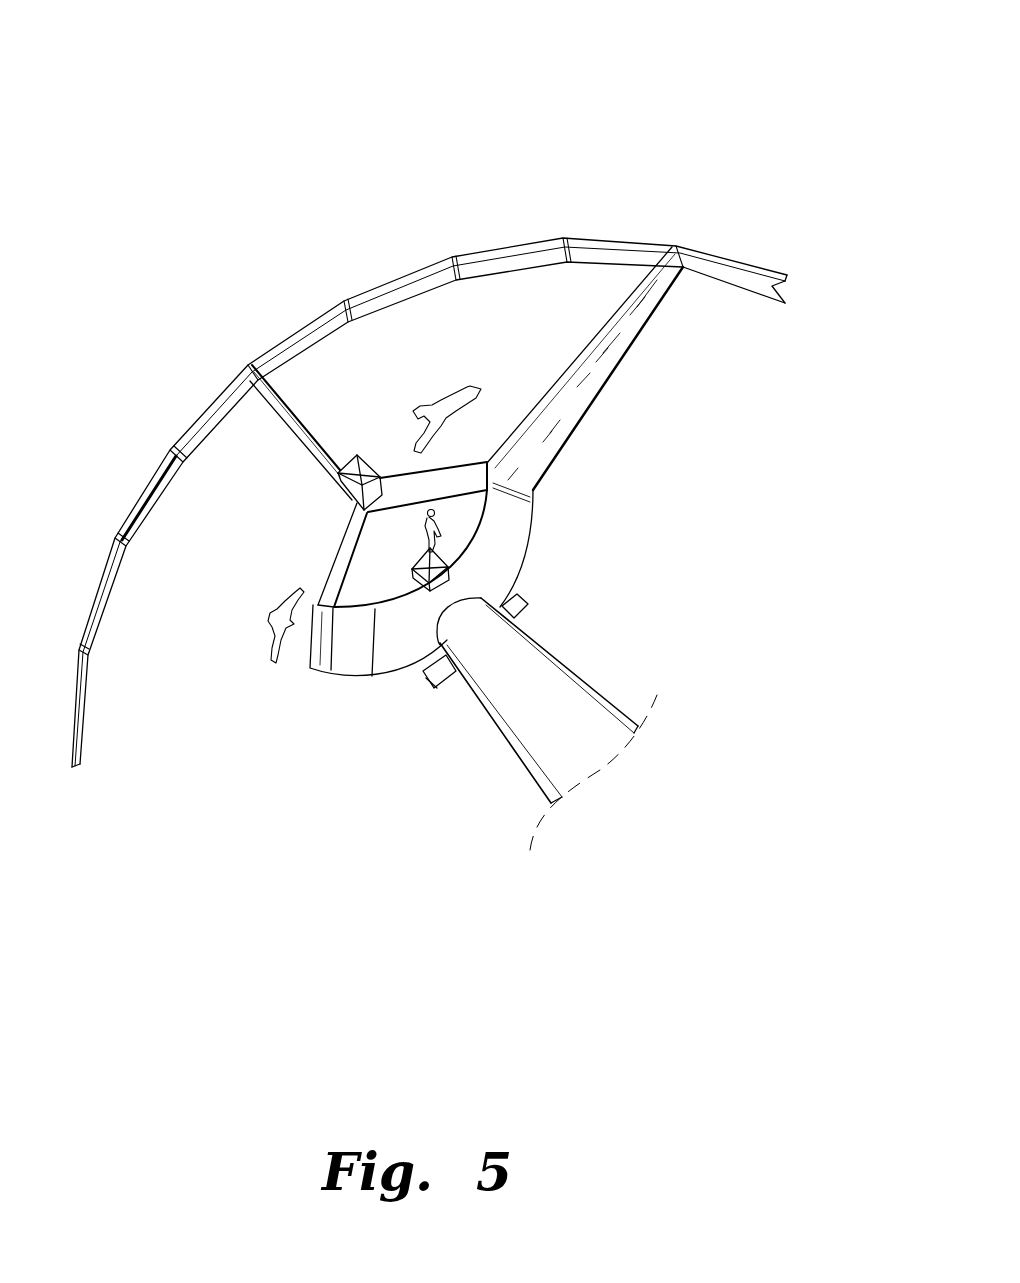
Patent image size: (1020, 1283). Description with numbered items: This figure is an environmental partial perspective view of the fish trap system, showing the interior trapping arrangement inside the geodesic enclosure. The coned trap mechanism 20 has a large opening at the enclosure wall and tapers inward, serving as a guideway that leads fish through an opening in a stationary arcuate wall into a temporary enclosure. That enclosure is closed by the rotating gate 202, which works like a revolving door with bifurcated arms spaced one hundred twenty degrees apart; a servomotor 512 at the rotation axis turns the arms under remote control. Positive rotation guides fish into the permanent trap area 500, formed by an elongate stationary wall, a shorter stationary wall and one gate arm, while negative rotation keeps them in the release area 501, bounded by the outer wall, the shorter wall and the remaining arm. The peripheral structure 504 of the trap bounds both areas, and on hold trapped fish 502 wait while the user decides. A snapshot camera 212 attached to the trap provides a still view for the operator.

The coned trap mechanism 20 is at (575, 673).
The rotating gate 202 is at (414, 476).
The snapshot camera 212 is at (413, 580).
The permanent trap area 500 is at (384, 421).
The release area 501 is at (152, 591).
The on hold trapped fish 502 is at (437, 506).
The peripheral structure 504 is at (314, 320).
The servomotor 512 is at (338, 476).